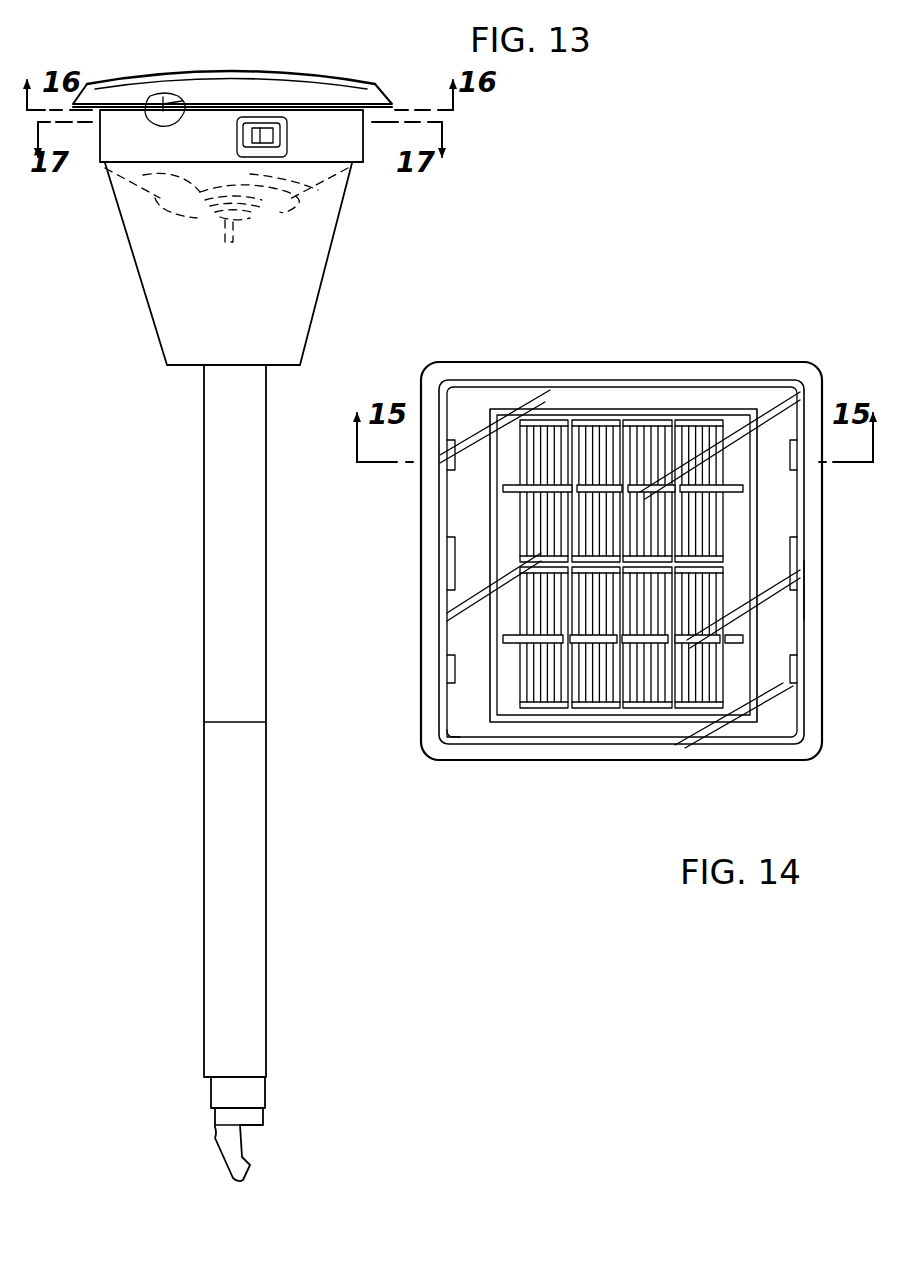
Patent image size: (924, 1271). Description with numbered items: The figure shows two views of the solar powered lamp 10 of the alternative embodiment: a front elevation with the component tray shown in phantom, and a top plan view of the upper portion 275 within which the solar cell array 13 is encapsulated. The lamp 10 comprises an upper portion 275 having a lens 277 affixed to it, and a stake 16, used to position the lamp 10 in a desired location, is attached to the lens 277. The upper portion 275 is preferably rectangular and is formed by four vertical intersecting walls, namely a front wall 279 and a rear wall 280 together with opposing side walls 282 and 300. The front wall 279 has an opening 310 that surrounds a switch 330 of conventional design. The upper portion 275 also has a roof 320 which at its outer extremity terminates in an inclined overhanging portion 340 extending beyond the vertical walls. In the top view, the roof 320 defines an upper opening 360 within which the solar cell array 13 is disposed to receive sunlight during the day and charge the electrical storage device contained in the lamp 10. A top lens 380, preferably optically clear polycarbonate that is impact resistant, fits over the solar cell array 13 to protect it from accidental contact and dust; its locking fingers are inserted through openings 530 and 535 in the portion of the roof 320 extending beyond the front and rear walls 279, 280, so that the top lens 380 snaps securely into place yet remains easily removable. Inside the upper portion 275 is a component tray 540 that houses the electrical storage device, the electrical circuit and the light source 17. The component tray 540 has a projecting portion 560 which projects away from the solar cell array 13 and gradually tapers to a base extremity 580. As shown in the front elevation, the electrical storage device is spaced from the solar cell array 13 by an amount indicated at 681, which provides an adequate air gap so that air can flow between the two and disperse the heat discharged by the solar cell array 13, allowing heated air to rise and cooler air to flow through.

In FIG. 13, the lamp 10 is at (122, 530).
In FIG. 13, the solar cell array 13 is at (181, 107).
In FIG. 14, the solar cell array 13 is at (633, 437).
In FIG. 13, the stake 16 is at (207, 875).
In FIG. 13, the light source 17 is at (238, 238).
In FIG. 13, the upper portion 275 is at (367, 143).
In FIG. 13, the lens 277 is at (313, 322).
In FIG. 13, the front wall 279 is at (115, 145).
In FIG. 14, the front wall 279 is at (822, 603).
In FIG. 14, the rear wall 280 is at (440, 606).
In FIG. 14, the side wall 282 is at (613, 762).
In FIG. 14, the side wall 300 is at (592, 362).
In FIG. 13, the opening 310 is at (238, 135).
In FIG. 13, the roof 320 is at (243, 81).
In FIG. 13, the switch 330 is at (268, 133).
In FIG. 13, the overhanging portion 340 is at (82, 88).
In FIG. 14, the upper opening 360 is at (780, 728).
In FIG. 13, the top lens 380 is at (303, 80).
In FIG. 14, the top lens 380 is at (447, 726).
In FIG. 14, the opening 530 is at (553, 390).
In FIG. 14, the opening 535 is at (447, 672).
In FIG. 13, the component tray 540 is at (160, 206).
In FIG. 13, the projecting portion 560 is at (283, 195).
In FIG. 13, the base extremity 580 is at (205, 216).
In FIG. 13, the air gap spacing 681 is at (252, 174).